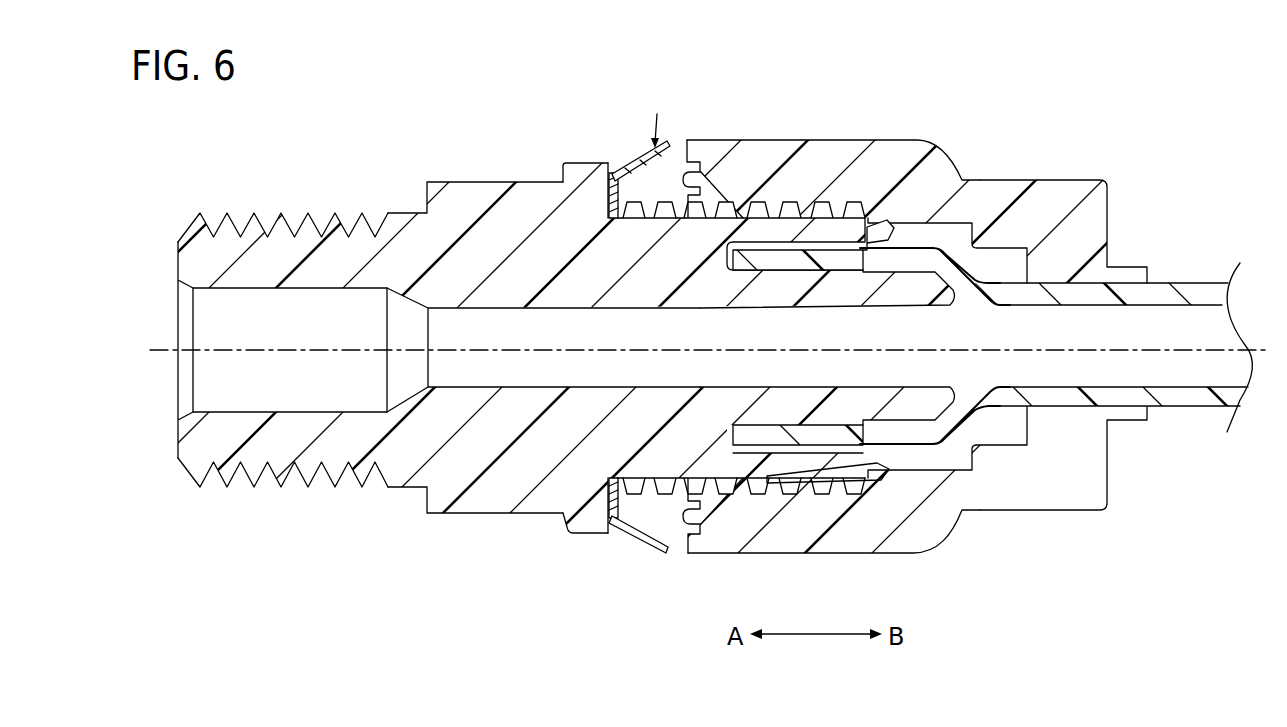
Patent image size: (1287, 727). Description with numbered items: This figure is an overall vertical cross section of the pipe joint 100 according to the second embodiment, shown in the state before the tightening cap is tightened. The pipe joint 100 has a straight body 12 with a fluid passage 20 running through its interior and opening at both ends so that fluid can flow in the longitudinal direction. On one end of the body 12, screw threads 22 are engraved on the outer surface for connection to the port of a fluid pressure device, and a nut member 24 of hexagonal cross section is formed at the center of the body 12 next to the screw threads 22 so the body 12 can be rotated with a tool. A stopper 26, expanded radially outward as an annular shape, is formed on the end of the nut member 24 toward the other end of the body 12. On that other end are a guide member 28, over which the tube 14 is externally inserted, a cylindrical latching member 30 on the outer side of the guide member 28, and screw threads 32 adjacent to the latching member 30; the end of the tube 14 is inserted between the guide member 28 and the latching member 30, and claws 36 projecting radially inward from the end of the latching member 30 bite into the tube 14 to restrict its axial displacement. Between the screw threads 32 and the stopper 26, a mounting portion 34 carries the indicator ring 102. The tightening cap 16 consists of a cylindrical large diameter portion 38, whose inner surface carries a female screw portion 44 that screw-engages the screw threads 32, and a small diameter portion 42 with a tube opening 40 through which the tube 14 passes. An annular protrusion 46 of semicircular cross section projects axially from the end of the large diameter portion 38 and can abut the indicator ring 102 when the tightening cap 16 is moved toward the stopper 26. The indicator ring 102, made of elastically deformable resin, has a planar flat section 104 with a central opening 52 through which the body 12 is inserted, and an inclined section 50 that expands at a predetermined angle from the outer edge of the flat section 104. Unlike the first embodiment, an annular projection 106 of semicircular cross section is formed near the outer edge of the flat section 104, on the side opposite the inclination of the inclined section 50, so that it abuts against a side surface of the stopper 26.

The pipe joint 100 is at (584, 66).
The body 12 is at (458, 537).
The tube 14 is at (1197, 288).
The tightening cap 16 is at (905, 115).
The fluid passage 20 is at (287, 288).
The screw threads 22 is at (277, 482).
The nut member 24 is at (472, 190).
The stopper 26 is at (560, 173).
The guide member 28 is at (902, 300).
The latching member 30 is at (880, 224).
The screw threads 32 is at (737, 488).
The mounting portion 34 is at (618, 520).
The claws 36 is at (863, 254).
The large diameter portion 38 is at (792, 152).
The tube opening 40 is at (1073, 287).
The small diameter portion 42 is at (1057, 200).
The female screw portion 44 is at (823, 485).
The protrusion 46 is at (688, 177).
The inclined section 50 is at (620, 168).
The opening 52 is at (614, 477).
The indicator ring 102 is at (657, 118).
The flat section 104 is at (612, 192).
The projection 106 is at (596, 167).